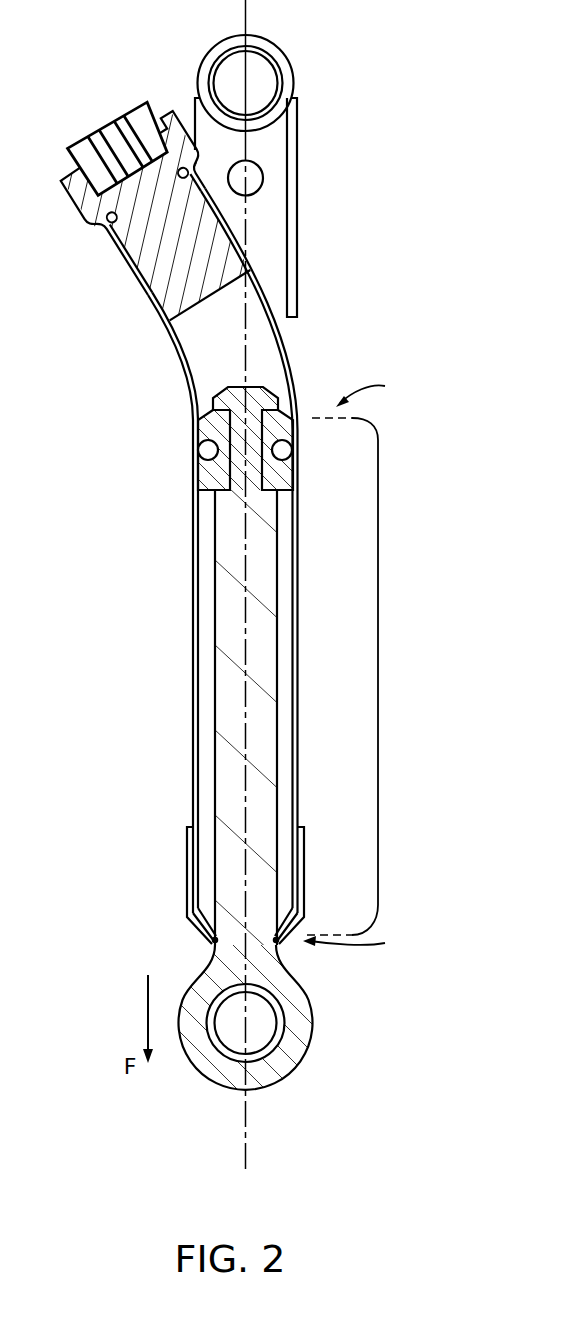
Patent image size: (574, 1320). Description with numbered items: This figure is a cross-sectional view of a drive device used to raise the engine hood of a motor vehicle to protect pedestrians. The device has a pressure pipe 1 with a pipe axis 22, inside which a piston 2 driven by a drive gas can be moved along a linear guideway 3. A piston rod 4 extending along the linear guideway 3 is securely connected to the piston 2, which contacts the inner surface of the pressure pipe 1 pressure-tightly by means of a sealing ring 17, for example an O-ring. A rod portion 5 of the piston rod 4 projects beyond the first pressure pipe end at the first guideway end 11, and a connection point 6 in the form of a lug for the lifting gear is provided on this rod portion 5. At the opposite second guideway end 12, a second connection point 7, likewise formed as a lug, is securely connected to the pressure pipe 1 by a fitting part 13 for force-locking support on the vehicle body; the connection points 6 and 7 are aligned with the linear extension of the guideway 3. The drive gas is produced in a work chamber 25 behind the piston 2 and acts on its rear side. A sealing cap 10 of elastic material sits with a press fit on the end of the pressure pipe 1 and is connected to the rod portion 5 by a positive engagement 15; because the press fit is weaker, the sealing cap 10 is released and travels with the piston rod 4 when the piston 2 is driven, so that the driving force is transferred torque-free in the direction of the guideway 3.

The pressure pipe 1 is at (193, 533).
The piston 2 is at (210, 432).
The linear guideway 3 is at (378, 678).
The piston rod 4 is at (228, 715).
The rod portion 5 is at (276, 977).
The connection point 6 is at (263, 1032).
The second connection point 7 is at (258, 72).
The sealing cap 10 is at (188, 828).
The first guideway end 11 is at (358, 944).
The second guideway end 12 is at (377, 391).
The fitting part 13 is at (274, 220).
The positive engagement 15 is at (213, 942).
The sealing ring 17 is at (283, 450).
The pipe axis 22 is at (262, 572).
The work chamber 25 is at (272, 350).